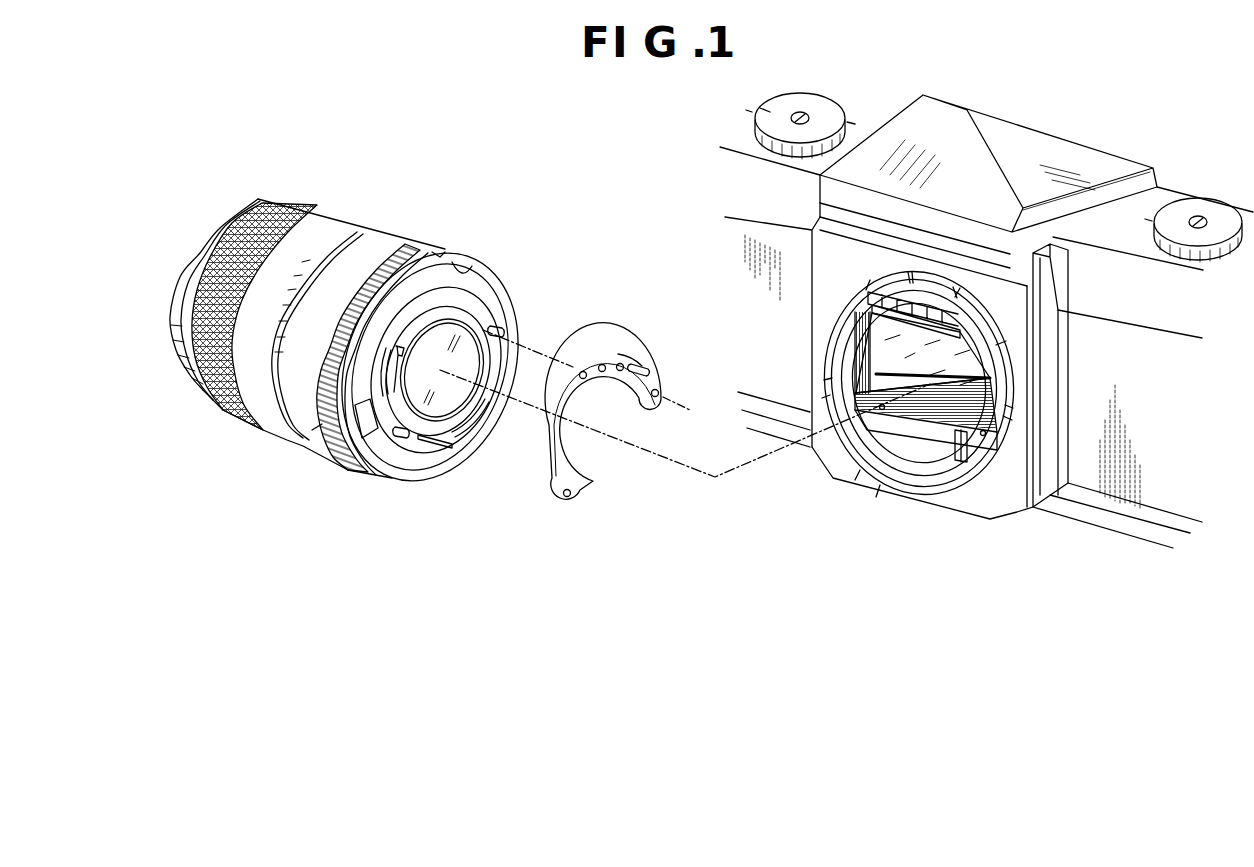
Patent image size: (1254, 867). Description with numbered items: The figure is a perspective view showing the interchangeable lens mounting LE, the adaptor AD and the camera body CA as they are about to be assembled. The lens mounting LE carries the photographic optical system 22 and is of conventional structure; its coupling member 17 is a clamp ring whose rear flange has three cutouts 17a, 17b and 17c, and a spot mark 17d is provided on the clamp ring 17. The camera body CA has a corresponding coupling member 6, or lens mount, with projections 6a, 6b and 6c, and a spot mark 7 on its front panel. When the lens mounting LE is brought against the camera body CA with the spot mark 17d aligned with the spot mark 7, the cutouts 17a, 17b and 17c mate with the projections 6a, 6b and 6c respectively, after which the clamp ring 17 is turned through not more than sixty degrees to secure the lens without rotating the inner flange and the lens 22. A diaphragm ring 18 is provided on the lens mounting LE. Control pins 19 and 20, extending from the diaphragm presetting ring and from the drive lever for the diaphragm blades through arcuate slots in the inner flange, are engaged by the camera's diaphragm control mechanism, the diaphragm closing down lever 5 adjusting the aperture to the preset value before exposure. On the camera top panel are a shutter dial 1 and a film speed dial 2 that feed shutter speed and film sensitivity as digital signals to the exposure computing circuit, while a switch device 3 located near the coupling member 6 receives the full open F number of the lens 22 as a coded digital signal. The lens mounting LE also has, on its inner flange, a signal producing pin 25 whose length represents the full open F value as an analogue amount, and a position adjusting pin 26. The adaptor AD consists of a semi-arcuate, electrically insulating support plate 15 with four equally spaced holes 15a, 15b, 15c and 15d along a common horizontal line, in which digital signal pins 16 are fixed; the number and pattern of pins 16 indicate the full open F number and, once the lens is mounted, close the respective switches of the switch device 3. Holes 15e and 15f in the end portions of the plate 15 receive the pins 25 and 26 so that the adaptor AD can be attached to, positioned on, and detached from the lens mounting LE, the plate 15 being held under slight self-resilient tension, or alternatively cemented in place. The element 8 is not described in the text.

The lens mounting LE is at (343, 196).
The adaptor AD is at (615, 342).
The camera body CA is at (1037, 120).
The shutter dial 1 is at (822, 102).
The film speed dial 2 is at (1197, 200).
The switch device 3 is at (857, 309).
The diaphragm closing down lever 5 is at (955, 452).
The coupling member 6 is at (855, 285).
The projection 6a is at (953, 291).
The projection 6b is at (987, 473).
The projection 6c is at (850, 418).
The spot mark 7 is at (921, 252).
The mirror 8 is at (878, 347).
The support plate 15 is at (555, 463).
The hole 15a is at (631, 355).
The hole 15b is at (620, 372).
The hole 15c is at (602, 364).
The hole 15d is at (583, 380).
The hole 15e is at (567, 503).
The hole 15f is at (660, 393).
The digital signal pin 16 is at (646, 370).
The coupling member (clamp ring) 17 is at (437, 252).
The cutout 17a is at (466, 267).
The cutout 17b is at (362, 435).
The cutout 17c is at (492, 428).
The spot mark 17d is at (440, 258).
The diaphragm ring 18 is at (312, 430).
The control pin 19 is at (402, 438).
The control pin 20 is at (432, 448).
The photographic optical system 22 is at (470, 362).
The signal producing pin 25 is at (405, 442).
The pin 26 is at (505, 330).